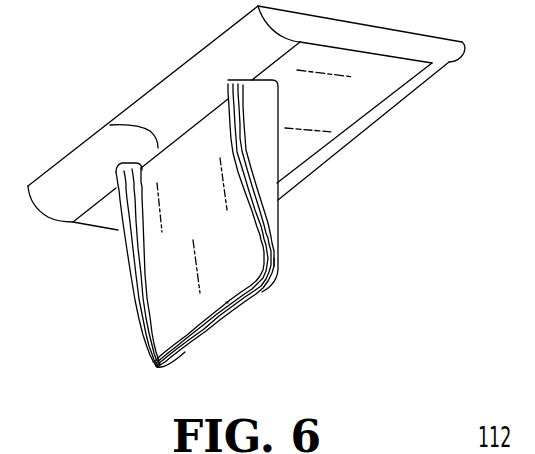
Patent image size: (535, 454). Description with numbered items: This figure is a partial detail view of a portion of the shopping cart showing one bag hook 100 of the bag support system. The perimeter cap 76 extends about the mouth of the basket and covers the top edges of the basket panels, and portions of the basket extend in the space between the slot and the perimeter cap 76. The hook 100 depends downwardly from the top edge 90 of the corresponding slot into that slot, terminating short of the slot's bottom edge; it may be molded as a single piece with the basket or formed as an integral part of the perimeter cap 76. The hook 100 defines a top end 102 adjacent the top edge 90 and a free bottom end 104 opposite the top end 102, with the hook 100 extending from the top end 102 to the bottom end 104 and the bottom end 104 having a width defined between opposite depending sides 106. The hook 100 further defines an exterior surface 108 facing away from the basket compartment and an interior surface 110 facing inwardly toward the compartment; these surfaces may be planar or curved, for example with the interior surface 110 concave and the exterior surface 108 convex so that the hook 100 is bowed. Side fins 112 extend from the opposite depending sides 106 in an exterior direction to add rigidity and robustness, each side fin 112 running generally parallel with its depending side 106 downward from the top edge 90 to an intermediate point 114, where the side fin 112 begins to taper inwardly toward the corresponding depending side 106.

The perimeter cap 76 is at (58, 192).
The top edge 90 is at (380, 78).
The hook 100 is at (280, 157).
The top end 102 is at (110, 125).
The bottom end 104 is at (182, 350).
The depending sides 106 is at (148, 351).
The exterior surface 108 is at (224, 263).
The interior surface 110 is at (280, 270).
The side fins 112 is at (130, 268).
The intermediate point 114 is at (230, 155).